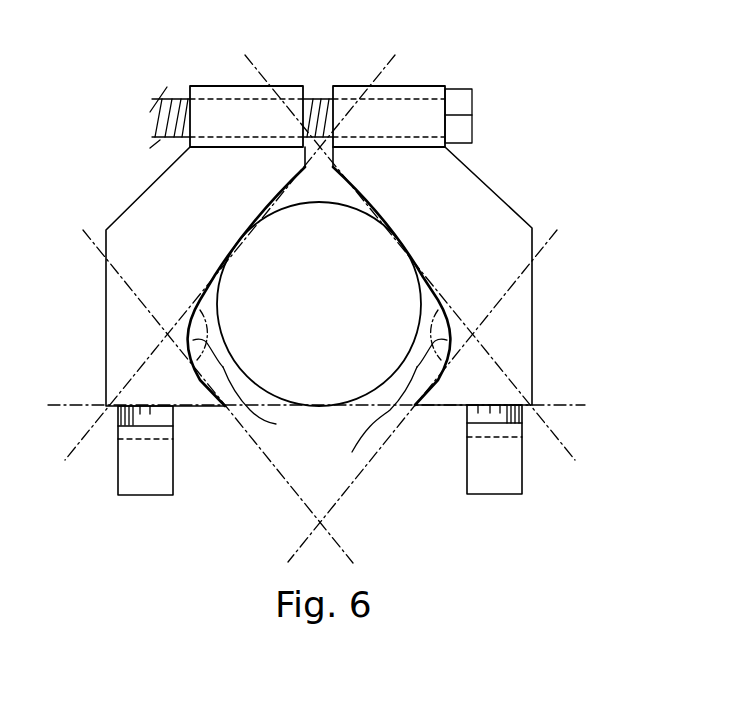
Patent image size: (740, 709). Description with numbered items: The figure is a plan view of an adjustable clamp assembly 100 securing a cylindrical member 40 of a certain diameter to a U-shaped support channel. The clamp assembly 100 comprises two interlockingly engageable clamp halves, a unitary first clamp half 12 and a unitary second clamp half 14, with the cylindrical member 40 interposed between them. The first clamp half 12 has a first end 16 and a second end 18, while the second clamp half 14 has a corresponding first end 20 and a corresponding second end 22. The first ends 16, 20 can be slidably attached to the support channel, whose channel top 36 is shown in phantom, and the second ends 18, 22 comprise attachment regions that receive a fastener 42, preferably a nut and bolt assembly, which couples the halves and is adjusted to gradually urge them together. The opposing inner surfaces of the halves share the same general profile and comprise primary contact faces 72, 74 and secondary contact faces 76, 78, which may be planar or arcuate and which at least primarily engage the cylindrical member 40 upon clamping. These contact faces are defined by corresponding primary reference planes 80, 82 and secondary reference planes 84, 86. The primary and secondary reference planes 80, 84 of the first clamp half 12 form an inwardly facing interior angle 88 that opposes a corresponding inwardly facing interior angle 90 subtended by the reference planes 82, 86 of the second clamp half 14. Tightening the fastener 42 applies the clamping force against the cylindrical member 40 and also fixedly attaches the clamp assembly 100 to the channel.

The clamp assembly 100 is at (497, 56).
The first clamp half 12 is at (229, 203).
The second clamp half 14 is at (443, 203).
The first end 16 is at (155, 496).
The second end 18 is at (218, 82).
The first end 20 is at (483, 494).
The second end 22 is at (412, 82).
The channel top 36 is at (580, 405).
The cylindrical member 40 is at (340, 380).
The fastener 42 is at (472, 108).
The primary contact face 72 is at (217, 273).
The primary contact face 74 is at (427, 277).
The secondary contact face 76 is at (200, 383).
The secondary contact face 78 is at (442, 387).
The primary reference plane 80 is at (255, 232).
The primary reference plane 82 is at (396, 248).
The secondary reference plane 84 is at (280, 472).
The secondary reference plane 86 is at (334, 505).
The interior angle 88 is at (265, 405).
The interior angle 90 is at (367, 420).